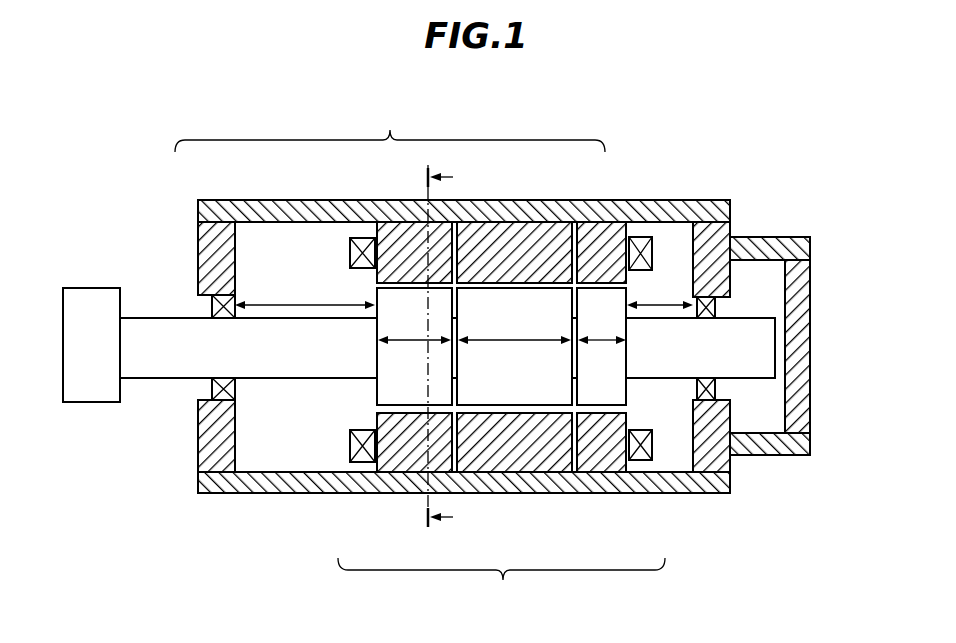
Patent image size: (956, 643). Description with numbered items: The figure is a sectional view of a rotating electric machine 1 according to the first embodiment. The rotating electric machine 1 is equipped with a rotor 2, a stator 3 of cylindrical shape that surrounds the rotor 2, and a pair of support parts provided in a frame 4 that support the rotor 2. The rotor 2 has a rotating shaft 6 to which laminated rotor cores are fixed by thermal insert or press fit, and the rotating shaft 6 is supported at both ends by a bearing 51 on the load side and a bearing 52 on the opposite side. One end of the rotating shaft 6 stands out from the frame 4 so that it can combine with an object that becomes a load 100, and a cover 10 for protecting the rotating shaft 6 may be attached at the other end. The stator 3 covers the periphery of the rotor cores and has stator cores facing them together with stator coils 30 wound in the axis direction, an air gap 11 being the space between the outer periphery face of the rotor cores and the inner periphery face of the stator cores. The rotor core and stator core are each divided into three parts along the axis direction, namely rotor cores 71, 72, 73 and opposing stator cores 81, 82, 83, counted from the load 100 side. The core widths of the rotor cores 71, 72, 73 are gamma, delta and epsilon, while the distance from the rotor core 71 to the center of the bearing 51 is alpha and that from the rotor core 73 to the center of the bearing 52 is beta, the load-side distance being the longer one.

The rotating electric machine 1 is at (110, 117).
The rotor 2 is at (383, 121).
The stator 3 is at (496, 616).
The frame 4 is at (198, 455).
The rotating shaft 6 is at (160, 318).
The cover 10 is at (812, 287).
The air gap 11 is at (373, 408).
The stator coils 30 is at (363, 463).
The bearing 51 is at (212, 388).
The bearing 52 is at (785, 412).
The rotor core 71 is at (415, 287).
The rotor core 72 is at (515, 287).
The rotor core 73 is at (603, 287).
The stator core 81 is at (415, 475).
The stator core 82 is at (495, 475).
The stator core 83 is at (595, 475).
The load 100 is at (92, 288).